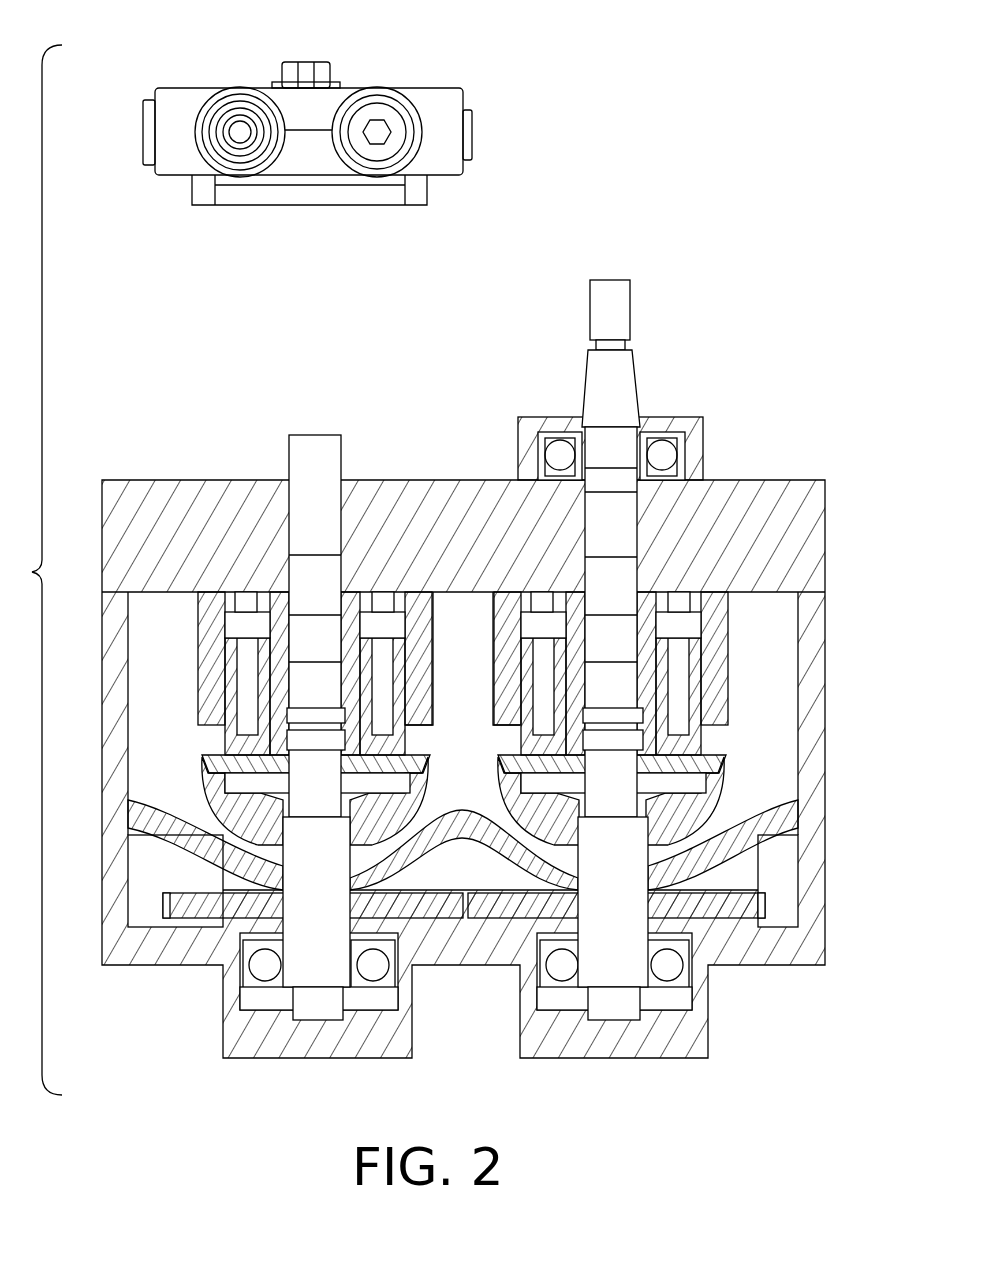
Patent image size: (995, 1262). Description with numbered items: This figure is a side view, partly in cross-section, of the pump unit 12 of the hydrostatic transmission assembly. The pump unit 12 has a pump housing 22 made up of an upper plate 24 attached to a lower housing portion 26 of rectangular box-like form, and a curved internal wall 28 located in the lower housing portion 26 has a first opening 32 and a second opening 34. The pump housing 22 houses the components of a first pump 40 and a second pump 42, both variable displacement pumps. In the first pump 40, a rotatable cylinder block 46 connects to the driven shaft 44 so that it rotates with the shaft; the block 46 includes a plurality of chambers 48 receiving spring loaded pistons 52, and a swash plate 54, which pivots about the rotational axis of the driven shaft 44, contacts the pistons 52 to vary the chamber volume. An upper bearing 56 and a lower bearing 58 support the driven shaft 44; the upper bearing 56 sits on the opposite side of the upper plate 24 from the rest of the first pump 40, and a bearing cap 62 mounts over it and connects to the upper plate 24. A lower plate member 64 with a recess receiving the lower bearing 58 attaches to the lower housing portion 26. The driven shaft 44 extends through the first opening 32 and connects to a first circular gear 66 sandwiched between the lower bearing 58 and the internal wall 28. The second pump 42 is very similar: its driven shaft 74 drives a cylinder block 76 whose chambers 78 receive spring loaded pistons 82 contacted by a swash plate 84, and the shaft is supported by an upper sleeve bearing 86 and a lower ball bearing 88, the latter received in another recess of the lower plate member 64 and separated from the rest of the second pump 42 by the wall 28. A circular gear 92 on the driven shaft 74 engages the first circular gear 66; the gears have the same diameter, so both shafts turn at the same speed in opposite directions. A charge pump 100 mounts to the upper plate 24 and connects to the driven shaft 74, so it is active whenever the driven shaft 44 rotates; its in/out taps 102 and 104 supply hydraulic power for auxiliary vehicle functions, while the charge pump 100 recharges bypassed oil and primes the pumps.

The pump unit 12 is at (33, 570).
The pump housing 22 is at (508, 765).
The upper plate 24 is at (812, 503).
The lower housing portion 26 is at (815, 848).
The curved internal wall 28 is at (497, 848).
The first opening 32 is at (652, 868).
The second opening 34 is at (280, 870).
The first pump 40 is at (687, 715).
The second pump 42 is at (241, 690).
The driven shaft 44 is at (619, 650).
The rotatable cylinder block 46 is at (722, 708).
The chambers 48 is at (690, 625).
The spring loaded pistons 52 is at (697, 653).
The swash plate 54 is at (728, 770).
The upper bearing 56 is at (680, 472).
The lower bearing 58 is at (683, 980).
The bearing cap 62 is at (648, 443).
The lower plate member 64 is at (815, 927).
The first circular gear 66 is at (733, 912).
The driven shaft 74 is at (280, 723).
The cylinder block 76 is at (208, 648).
The chambers 78 is at (237, 625).
The spring loaded pistons 82 is at (233, 688).
The swash plate 84 is at (205, 763).
The upper sleeve bearing 86 is at (302, 588).
The lower ball bearing 88 is at (243, 980).
The circular gear 92 is at (190, 910).
The charge pump 100 is at (374, 112).
The in/out tap 102 is at (378, 108).
The in/out tap 104 is at (240, 108).